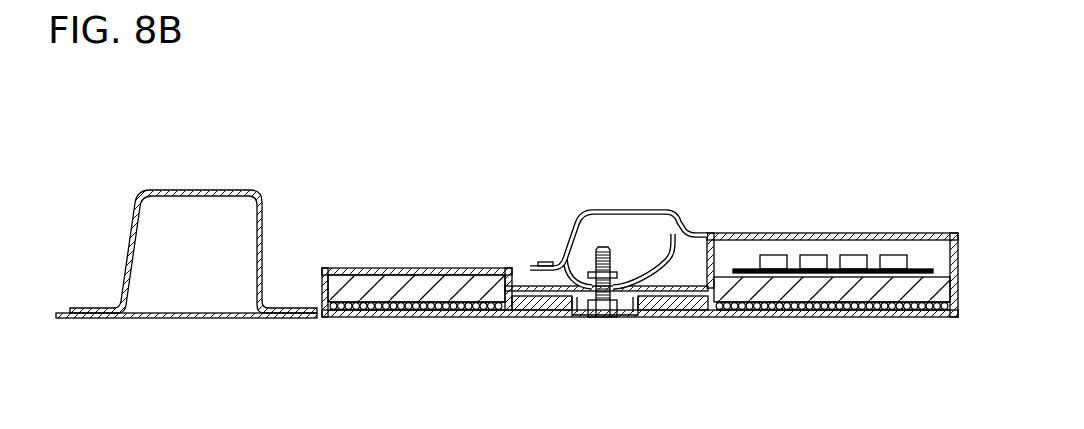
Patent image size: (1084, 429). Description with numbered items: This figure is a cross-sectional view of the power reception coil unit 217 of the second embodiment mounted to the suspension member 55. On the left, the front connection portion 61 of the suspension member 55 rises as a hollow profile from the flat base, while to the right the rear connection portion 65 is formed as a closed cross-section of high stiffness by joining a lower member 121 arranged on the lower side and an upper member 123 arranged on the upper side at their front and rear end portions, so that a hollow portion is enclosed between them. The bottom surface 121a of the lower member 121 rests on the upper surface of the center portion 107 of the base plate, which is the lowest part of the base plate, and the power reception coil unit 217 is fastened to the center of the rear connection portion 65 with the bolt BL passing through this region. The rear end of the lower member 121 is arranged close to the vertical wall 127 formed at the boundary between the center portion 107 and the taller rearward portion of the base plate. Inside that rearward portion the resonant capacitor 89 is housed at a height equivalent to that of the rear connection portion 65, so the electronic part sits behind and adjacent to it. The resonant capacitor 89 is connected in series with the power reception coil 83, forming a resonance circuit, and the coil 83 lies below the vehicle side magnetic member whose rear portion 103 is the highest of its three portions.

The suspension member 55 is at (182, 318).
The front connection portion 61 is at (204, 188).
The power reception coil unit 217 is at (410, 268).
The center portion 107 is at (517, 284).
The bolt BL is at (592, 258).
The rear connection portion 65 is at (638, 198).
The upper member 123 is at (658, 211).
The lower member 121 is at (671, 266).
The bottom surface 121a is at (630, 303).
The vertical wall 127 is at (710, 288).
The resonant capacitor 89 is at (857, 257).
The power reception coil 83 is at (865, 307).
The rear portion 103 is at (913, 293).